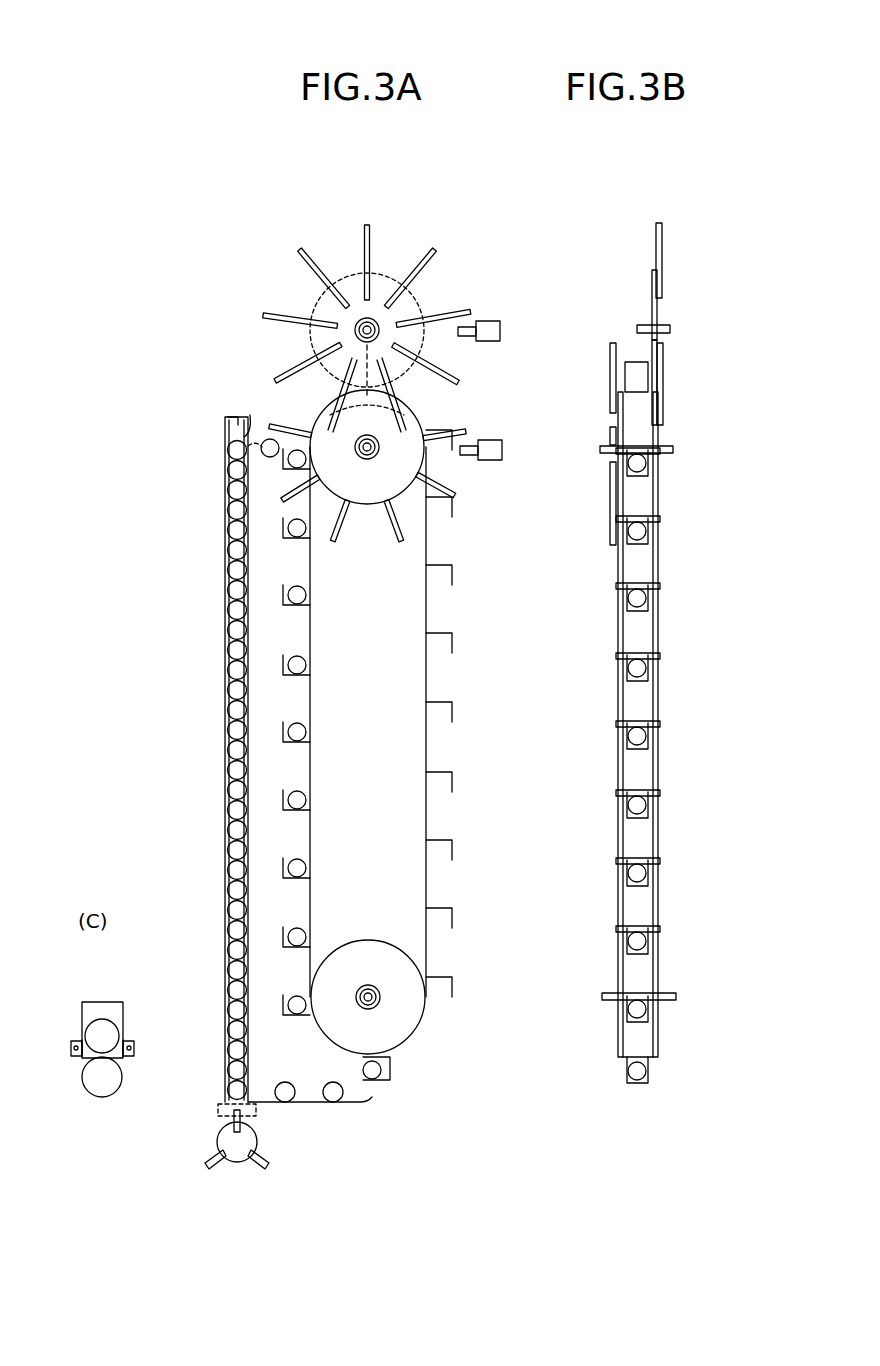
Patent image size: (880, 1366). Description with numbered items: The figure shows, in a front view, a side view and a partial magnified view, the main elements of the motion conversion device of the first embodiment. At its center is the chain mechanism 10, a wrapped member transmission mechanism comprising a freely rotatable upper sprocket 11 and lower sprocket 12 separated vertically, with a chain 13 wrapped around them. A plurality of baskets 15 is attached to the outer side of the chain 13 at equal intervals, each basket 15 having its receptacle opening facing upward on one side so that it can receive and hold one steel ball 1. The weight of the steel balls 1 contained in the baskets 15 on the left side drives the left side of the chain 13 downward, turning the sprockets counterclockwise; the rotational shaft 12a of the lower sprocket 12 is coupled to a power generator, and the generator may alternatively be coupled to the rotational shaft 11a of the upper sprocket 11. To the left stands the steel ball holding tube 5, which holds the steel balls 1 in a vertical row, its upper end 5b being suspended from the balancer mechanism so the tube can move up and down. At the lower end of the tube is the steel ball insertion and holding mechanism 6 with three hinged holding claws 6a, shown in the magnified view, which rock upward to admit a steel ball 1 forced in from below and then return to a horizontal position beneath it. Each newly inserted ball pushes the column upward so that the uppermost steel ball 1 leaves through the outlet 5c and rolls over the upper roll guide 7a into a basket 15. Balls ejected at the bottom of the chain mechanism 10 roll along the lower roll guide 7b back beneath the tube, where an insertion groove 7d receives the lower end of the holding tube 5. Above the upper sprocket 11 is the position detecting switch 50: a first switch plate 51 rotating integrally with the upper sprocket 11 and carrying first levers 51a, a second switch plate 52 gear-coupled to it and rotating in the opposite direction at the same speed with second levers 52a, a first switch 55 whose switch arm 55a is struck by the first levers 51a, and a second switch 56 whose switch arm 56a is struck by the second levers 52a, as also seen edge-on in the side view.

In FIG. 3A, the steel ball 1 is at (268, 440).
In FIG. 3B, the steel ball 1 is at (650, 662).
In FIG. 3A, the steel ball holding tube 5 is at (226, 775).
In FIG. 3A, the upper end 5b is at (228, 416).
In FIG. 3A, the outlet 5c is at (250, 415).
In FIG. 3A, the steel ball insertion and holding mechanism 6 is at (140, 1044).
In FIG. 3A, the holding claws 6a is at (74, 1056).
In FIG. 3A, the upper roll guide 7a is at (258, 452).
In FIG. 3A, the lower roll guide 7b is at (356, 1104).
In FIG. 3A, the insertion groove 7d is at (218, 1112).
In FIG. 3A, the chain mechanism 10 is at (483, 493).
In FIG. 3B, the chain mechanism 10 is at (680, 512).
In FIG. 3A, the upper sprocket 11 is at (362, 483).
In FIG. 3A, the rotational shaft 11a is at (374, 452).
In FIG. 3A, the lower sprocket 12 is at (424, 1022).
In FIG. 3A, the rotational shaft 12a is at (376, 992).
In FIG. 3A, the chain 13 is at (428, 824).
In FIG. 3B, the chain 13 is at (617, 768).
In FIG. 3A, the basket 15 is at (285, 534).
In FIG. 3B, the basket 15 is at (650, 726).
In FIG. 3A, the position detecting switch 50 is at (515, 294).
In FIG. 3B, the first switch plate 51 is at (612, 478).
In FIG. 3A, the first levers 51a is at (432, 392).
In FIG. 3B, the first levers 51a is at (612, 360).
In FIG. 3A, the second switch plate 52 is at (422, 300).
In FIG. 3B, the second switch plate 52 is at (652, 302).
In FIG. 3A, the second levers 52a is at (432, 258).
In FIG. 3B, the second levers 52a is at (664, 256).
In FIG. 3A, the first switch 55 is at (502, 449).
In FIG. 3A, the switch arm 55a is at (470, 444).
In FIG. 3A, the second switch 56 is at (502, 330).
In FIG. 3A, the switch arm 56a is at (464, 340).